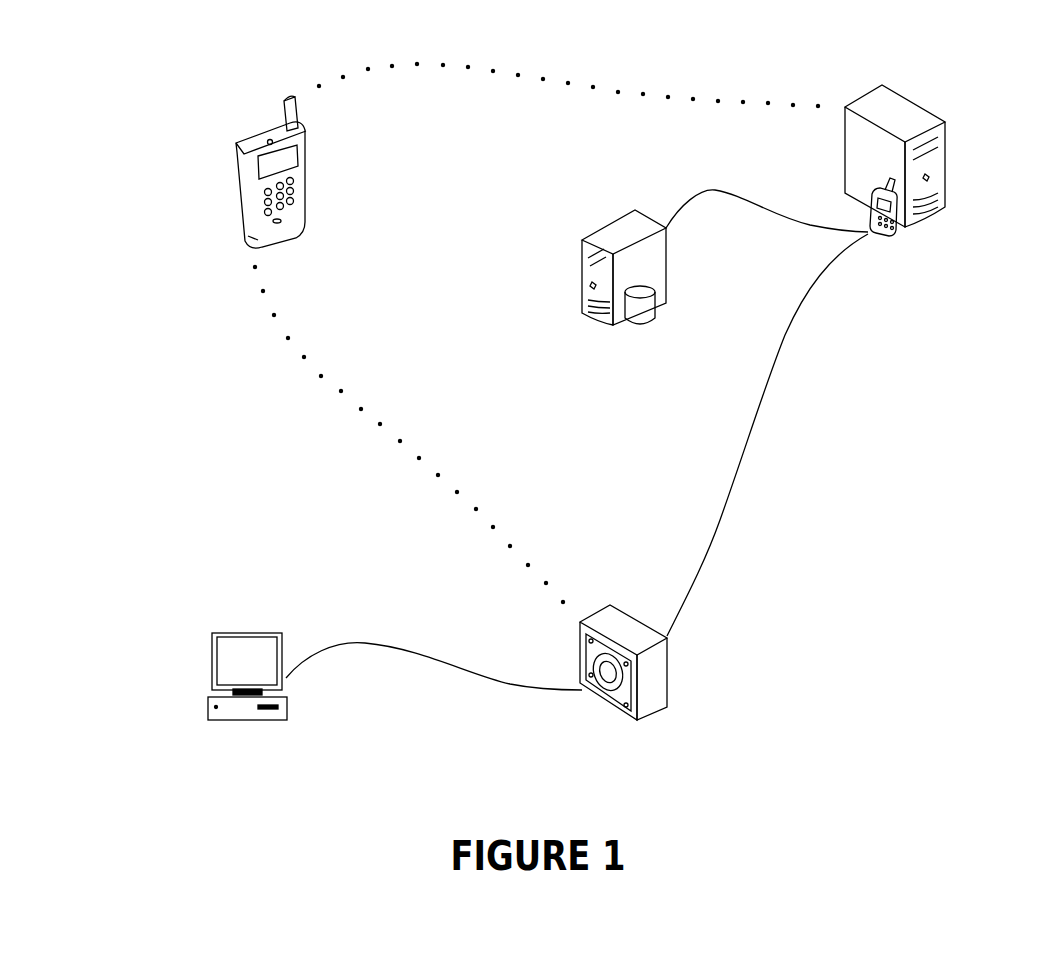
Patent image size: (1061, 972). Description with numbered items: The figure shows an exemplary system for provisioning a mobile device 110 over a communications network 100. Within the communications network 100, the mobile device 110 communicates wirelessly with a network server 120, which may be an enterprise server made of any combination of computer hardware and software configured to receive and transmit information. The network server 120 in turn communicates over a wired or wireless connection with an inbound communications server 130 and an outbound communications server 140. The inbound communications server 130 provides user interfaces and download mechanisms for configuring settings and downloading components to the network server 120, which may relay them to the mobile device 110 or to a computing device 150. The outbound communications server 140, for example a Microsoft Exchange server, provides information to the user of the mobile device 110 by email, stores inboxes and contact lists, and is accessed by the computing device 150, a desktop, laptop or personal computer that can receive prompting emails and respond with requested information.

The communications network 100 is at (106, 109).
The mobile device 110 is at (174, 261).
The network server 120 is at (1015, 273).
The inbound communications server 130 is at (534, 255).
The outbound communications server 140 is at (718, 790).
The computing device 150 is at (232, 800).